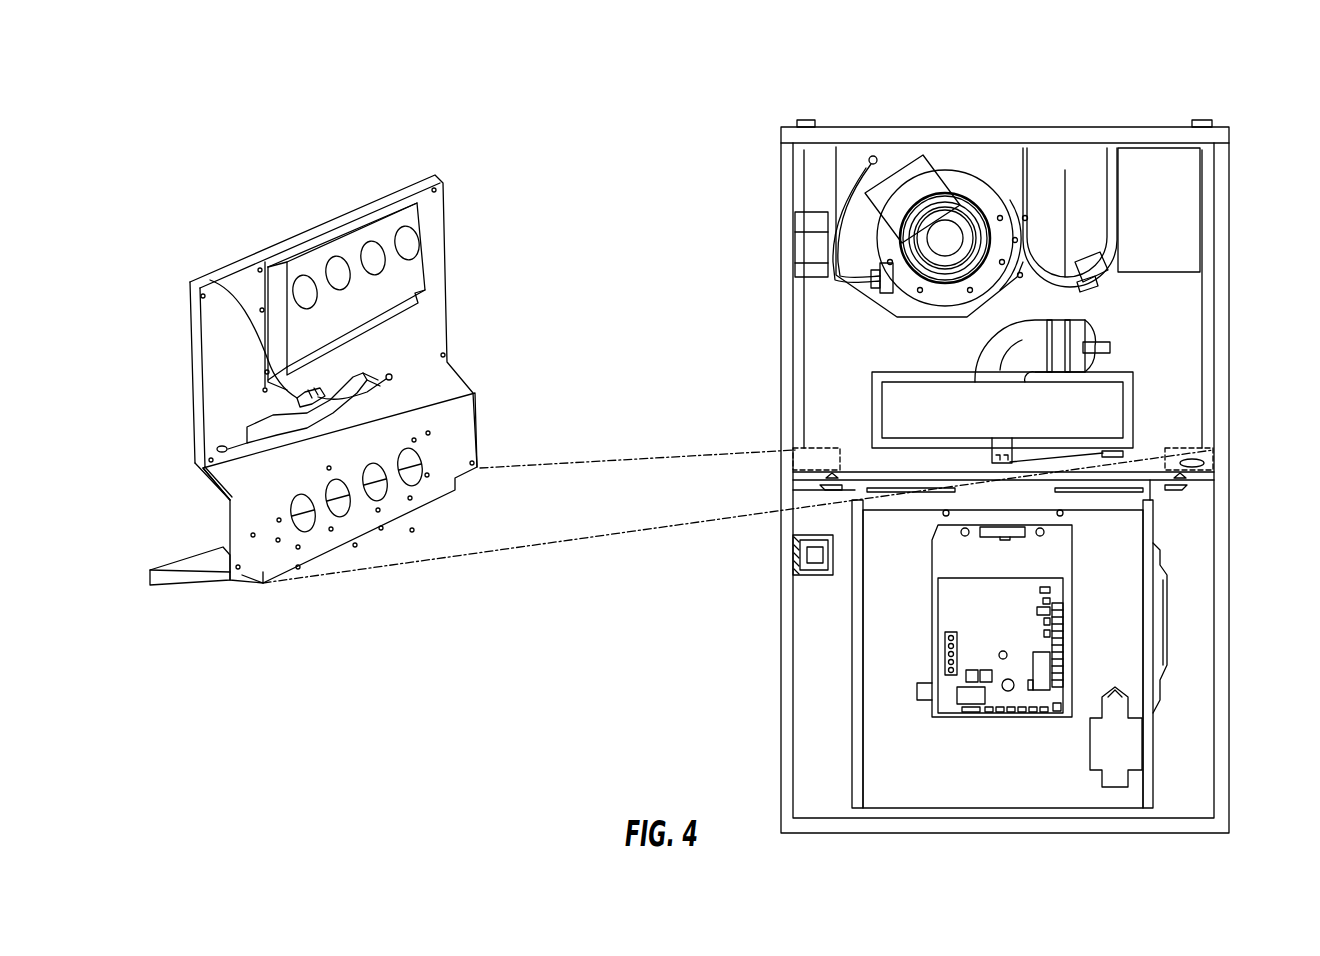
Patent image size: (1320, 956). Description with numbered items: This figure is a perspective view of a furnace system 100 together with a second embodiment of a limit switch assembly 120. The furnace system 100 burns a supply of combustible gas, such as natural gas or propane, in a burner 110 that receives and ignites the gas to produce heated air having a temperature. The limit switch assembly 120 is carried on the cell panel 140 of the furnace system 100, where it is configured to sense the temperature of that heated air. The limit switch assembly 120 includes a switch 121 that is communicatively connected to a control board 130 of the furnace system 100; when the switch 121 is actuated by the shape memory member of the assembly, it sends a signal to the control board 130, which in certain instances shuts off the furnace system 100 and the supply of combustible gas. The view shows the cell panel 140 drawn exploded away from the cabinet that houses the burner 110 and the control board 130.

The furnace system 100 is at (1222, 92).
The burner 110 is at (1015, 420).
The limit switch assembly 120 is at (391, 372).
The switch 121 is at (210, 280).
The control board 130 is at (1017, 620).
The cell panel 140 is at (197, 376).